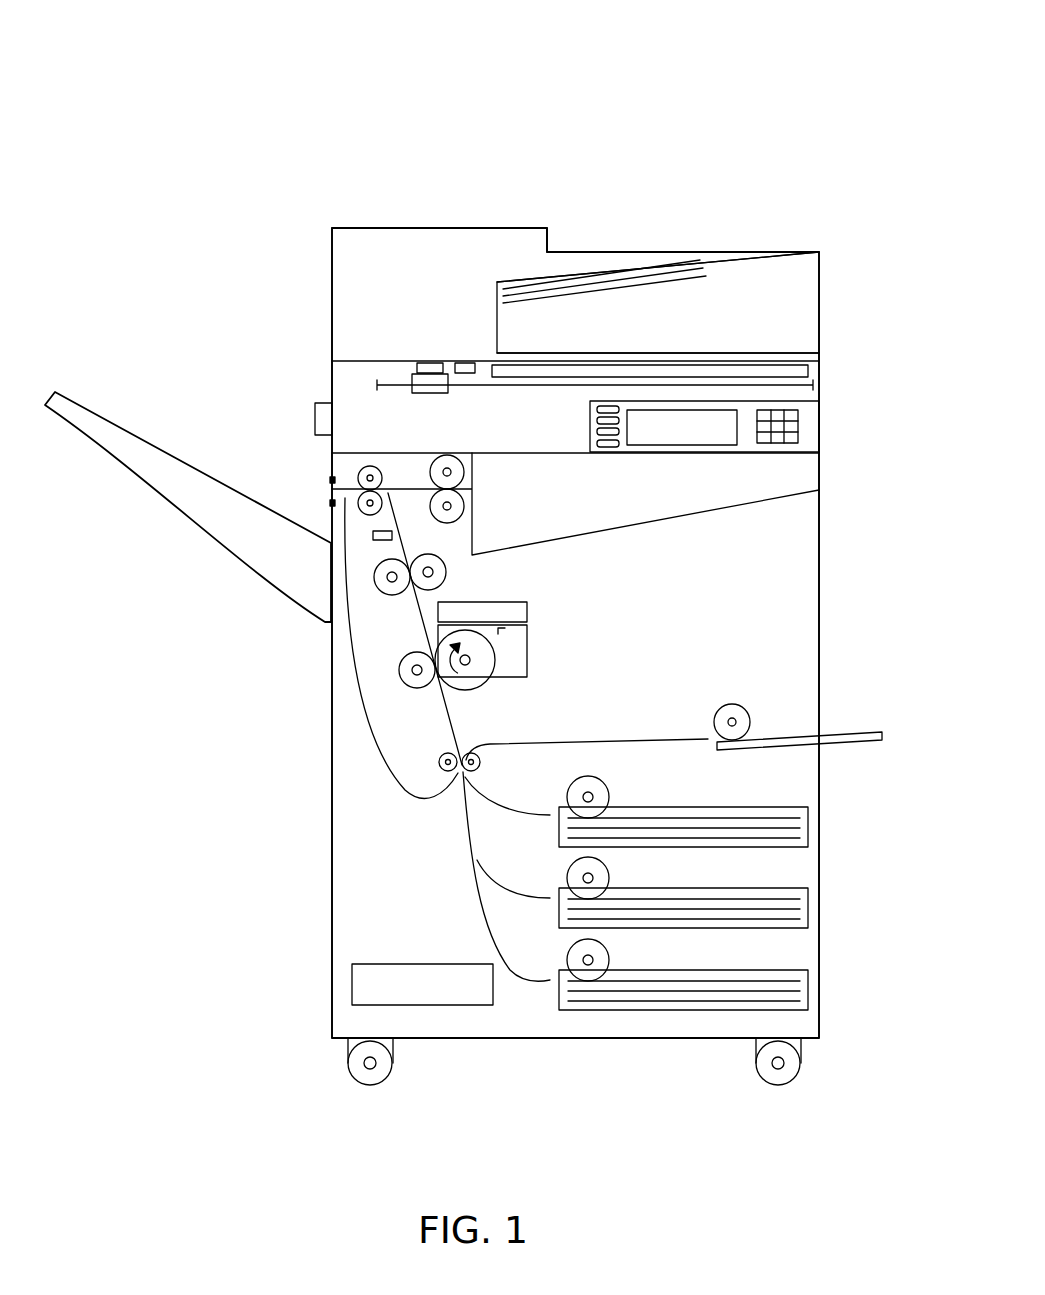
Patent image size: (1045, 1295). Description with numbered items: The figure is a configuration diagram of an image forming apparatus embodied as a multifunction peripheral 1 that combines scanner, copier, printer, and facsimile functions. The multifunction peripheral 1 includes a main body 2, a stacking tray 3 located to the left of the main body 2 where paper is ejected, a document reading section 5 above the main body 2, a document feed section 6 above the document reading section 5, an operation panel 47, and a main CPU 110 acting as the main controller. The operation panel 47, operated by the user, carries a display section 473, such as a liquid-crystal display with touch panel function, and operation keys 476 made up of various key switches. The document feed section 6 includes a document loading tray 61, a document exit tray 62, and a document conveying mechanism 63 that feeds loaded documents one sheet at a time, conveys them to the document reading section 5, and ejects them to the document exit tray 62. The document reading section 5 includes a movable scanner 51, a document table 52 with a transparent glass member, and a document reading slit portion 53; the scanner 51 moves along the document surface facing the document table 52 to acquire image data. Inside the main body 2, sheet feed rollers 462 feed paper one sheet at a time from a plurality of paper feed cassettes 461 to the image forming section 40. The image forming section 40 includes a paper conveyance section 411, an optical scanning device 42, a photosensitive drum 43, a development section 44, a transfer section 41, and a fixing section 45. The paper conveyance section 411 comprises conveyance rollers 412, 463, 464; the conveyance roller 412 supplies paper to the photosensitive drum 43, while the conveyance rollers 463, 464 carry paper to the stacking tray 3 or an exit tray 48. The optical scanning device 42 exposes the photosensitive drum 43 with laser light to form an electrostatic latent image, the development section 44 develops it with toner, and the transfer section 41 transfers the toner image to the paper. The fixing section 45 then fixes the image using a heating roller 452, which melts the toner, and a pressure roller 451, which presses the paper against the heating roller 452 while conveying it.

The multifunction peripheral 1 is at (683, 87).
The main body 2 is at (780, 645).
The stacking tray 3 is at (132, 495).
The document reading section 5 is at (370, 400).
The document feed section 6 is at (612, 260).
The image forming section 40 is at (380, 655).
The transfer section 41 is at (400, 675).
The optical scanning device 42 is at (520, 612).
The photosensitive drum 43 is at (478, 688).
The development section 44 is at (525, 653).
The fixing section 45 is at (407, 598).
The operation panel 47 is at (590, 418).
The exit tray 48 is at (623, 530).
The scanner 51 is at (433, 393).
The document table 52 is at (800, 370).
The document reading slit portion 53 is at (427, 367).
The document loading tray 61 is at (722, 263).
The document exit tray 62 is at (738, 353).
The document conveying mechanism 63 is at (398, 217).
The main CPU 110 is at (352, 978).
The paper conveyance section 411 is at (114, 603).
The conveyance roller 412 is at (440, 762).
The pressure roller 451 is at (383, 593).
The heating roller 452 is at (448, 576).
The paper feed cassettes 461 is at (802, 833).
The sheet feed rollers 462 is at (604, 794).
The conveyance roller 463 is at (445, 506).
The conveyance roller 464 is at (358, 481).
The display section 473 is at (667, 432).
The operation keys 476 is at (800, 417).